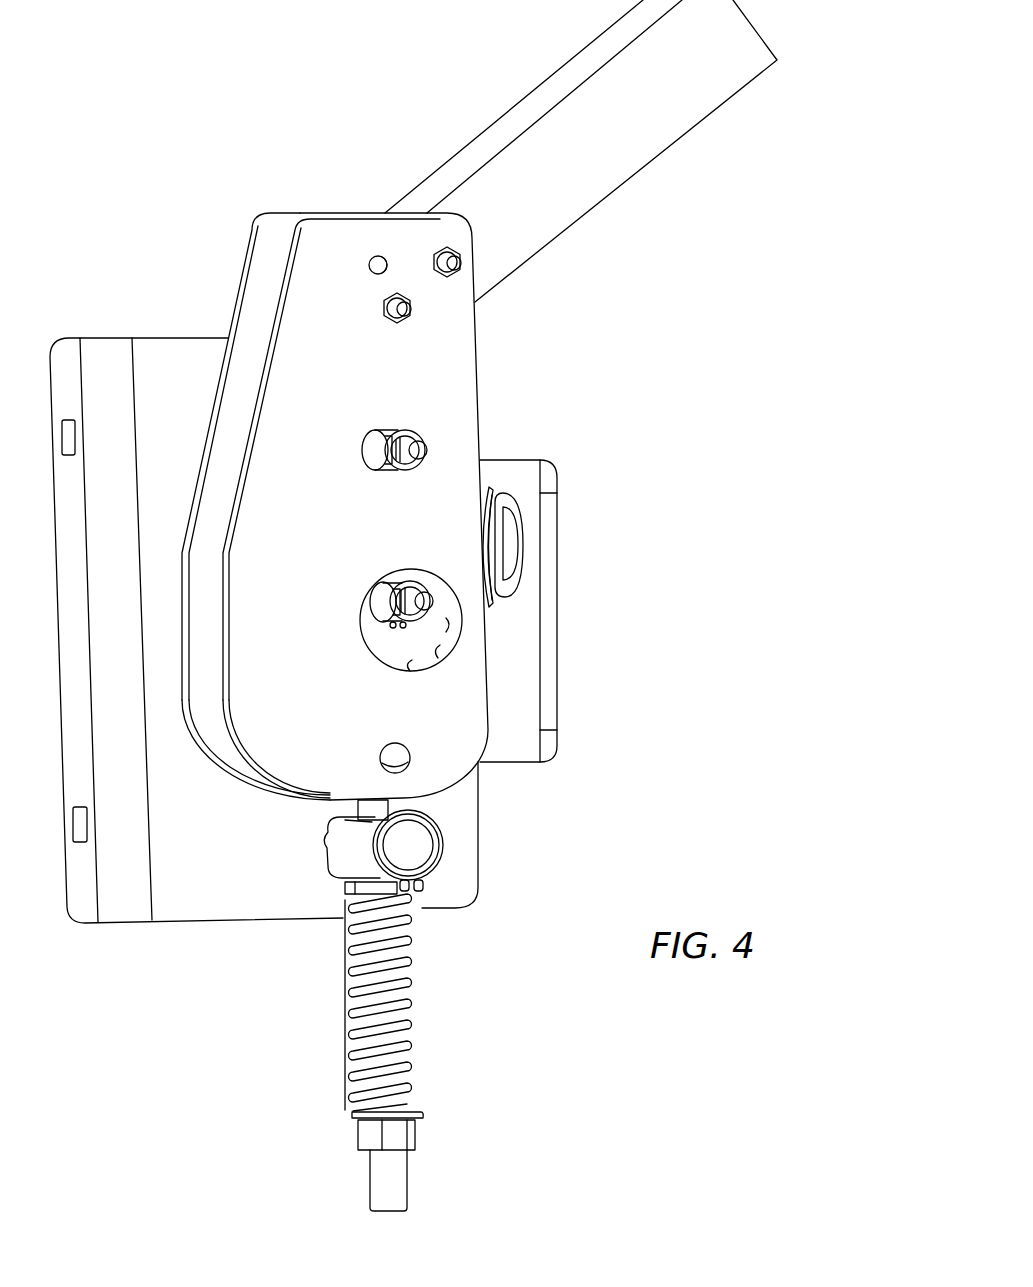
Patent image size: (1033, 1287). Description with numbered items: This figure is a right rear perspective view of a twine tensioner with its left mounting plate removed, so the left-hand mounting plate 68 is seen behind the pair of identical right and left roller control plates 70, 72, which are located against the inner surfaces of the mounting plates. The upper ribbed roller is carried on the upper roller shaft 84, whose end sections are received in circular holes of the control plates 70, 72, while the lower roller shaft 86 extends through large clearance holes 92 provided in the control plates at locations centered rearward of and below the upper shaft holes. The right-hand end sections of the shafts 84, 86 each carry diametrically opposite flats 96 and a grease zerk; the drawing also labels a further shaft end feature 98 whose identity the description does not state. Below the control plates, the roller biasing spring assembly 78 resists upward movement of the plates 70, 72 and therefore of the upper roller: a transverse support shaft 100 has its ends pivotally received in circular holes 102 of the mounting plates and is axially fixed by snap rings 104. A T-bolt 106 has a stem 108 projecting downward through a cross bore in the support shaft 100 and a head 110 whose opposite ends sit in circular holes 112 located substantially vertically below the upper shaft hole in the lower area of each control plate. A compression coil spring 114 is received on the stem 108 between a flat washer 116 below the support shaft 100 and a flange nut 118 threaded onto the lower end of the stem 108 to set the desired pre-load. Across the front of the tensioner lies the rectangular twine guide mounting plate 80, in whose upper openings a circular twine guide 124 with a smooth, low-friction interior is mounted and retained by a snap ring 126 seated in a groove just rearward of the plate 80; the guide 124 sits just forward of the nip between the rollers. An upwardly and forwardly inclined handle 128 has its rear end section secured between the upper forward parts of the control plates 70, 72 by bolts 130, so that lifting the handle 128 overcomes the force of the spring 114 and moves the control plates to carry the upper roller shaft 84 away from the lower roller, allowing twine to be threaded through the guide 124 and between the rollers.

The left-hand mounting plate 68 is at (273, 920).
The right roller control plate 70 is at (330, 325).
The left roller control plate 72 is at (252, 268).
The roller biasing spring assembly 78 is at (416, 962).
The twine guide mounting plate 80 is at (530, 708).
The upper roller shaft 84 is at (410, 433).
The lower roller shaft 86 is at (410, 577).
The large holes 92 is at (434, 672).
The flats 96 is at (385, 432).
The collar 98 is at (400, 466).
The transverse support shaft 100 is at (430, 845).
The circular holes 102 is at (330, 832).
The snap rings 104 is at (425, 890).
The T-bolt 106 is at (386, 805).
The stem 108 is at (400, 1183).
The head 110 is at (392, 746).
The circular holes 112 is at (381, 759).
The compression coil spring 114 is at (420, 1028).
The flat washer 116 is at (348, 886).
The flange nut 118 is at (410, 1136).
The circular twine guide 124 is at (514, 546).
The snap ring 126 is at (490, 487).
The handle 128 is at (590, 172).
The bolts 130 is at (412, 310).